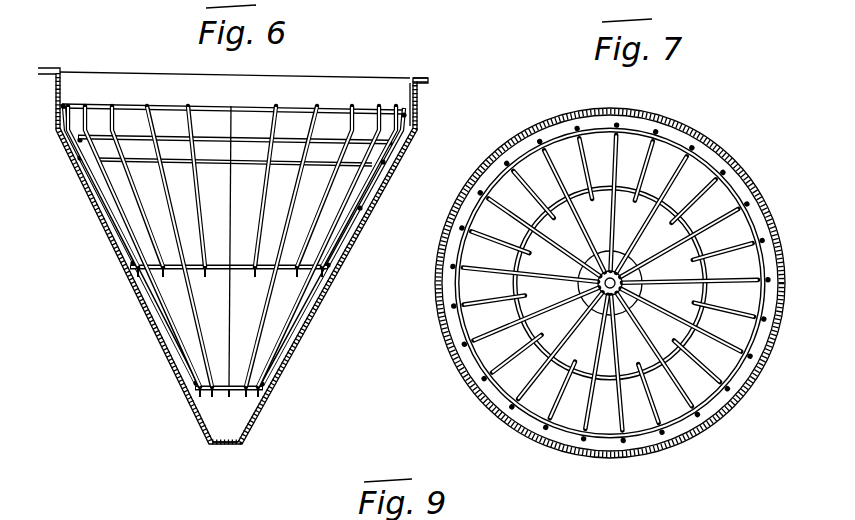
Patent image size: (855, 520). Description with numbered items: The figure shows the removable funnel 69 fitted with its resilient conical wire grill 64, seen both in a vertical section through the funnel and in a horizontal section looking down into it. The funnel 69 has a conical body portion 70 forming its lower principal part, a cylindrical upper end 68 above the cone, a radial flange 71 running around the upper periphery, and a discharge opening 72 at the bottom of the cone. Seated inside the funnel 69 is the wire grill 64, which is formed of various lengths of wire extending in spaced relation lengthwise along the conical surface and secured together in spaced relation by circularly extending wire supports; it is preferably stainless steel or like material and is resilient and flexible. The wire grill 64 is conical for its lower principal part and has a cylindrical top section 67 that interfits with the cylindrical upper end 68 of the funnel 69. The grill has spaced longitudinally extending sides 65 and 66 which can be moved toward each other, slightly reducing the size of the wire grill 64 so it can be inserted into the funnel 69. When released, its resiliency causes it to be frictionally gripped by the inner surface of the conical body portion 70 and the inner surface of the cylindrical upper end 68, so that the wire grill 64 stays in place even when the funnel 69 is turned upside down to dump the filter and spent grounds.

In FIG. 6, the resilient conical wire grill 64 is at (358, 208).
In FIG. 7, the resilient conical wire grill 64 is at (711, 166).
In FIG. 7, the longitudinally extending side 65 is at (597, 447).
In FIG. 7, the longitudinally extending side 66 is at (637, 453).
In FIG. 6, the cylindrical top section 67 is at (410, 122).
In FIG. 7, the cylindrical top section 67 is at (723, 222).
In FIG. 6, the cylindrical upper end 68 is at (415, 95).
In FIG. 6, the funnel 69 is at (92, 219).
In FIG. 7, the funnel 69 is at (749, 178).
In FIG. 6, the conical body portion 70 is at (350, 238).
In FIG. 7, the conical body portion 70 is at (450, 347).
In FIG. 6, the radial flange 71 is at (421, 75).
In FIG. 6, the discharge opening 72 is at (225, 443).
In FIG. 7, the discharge opening 72 is at (622, 284).